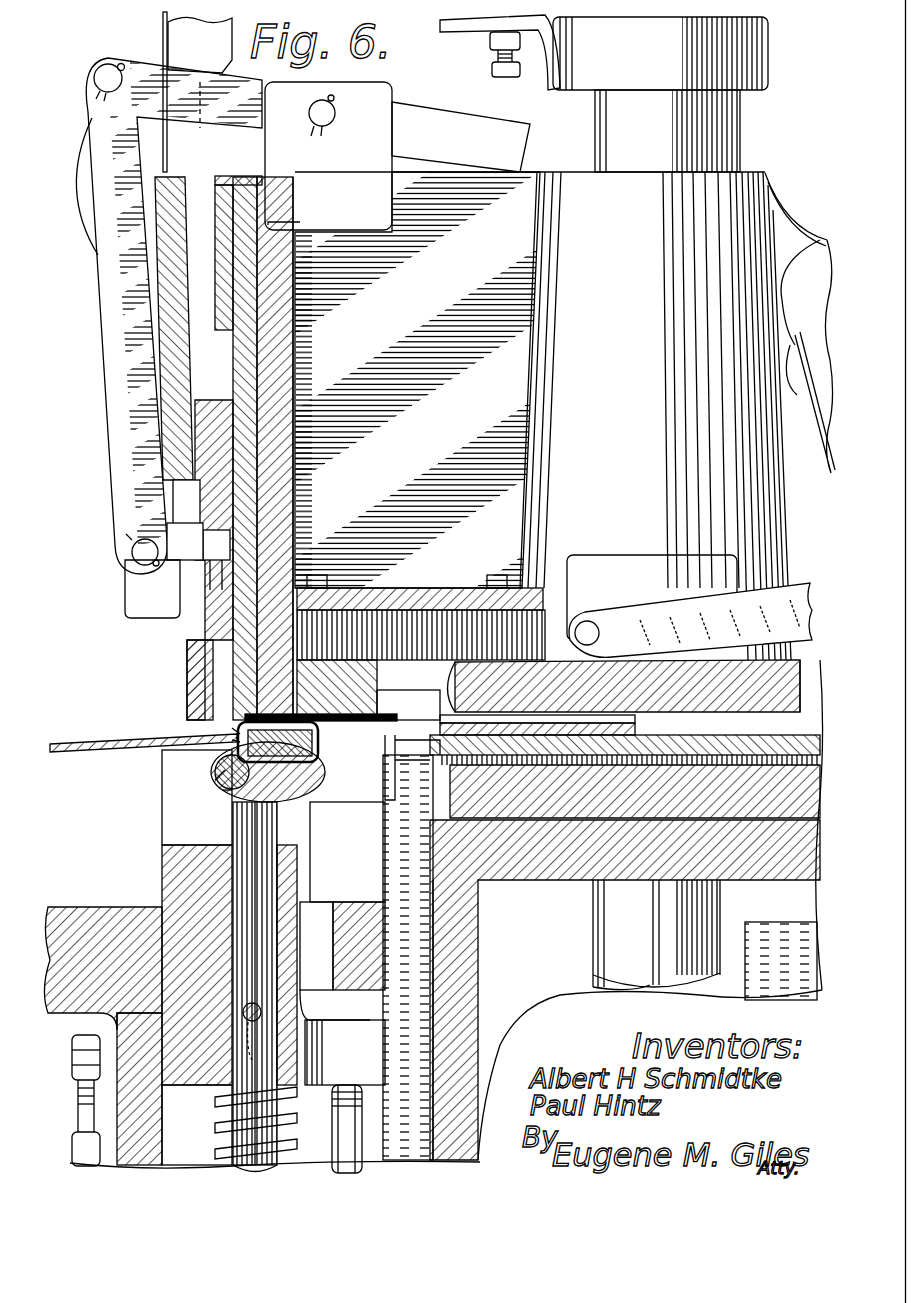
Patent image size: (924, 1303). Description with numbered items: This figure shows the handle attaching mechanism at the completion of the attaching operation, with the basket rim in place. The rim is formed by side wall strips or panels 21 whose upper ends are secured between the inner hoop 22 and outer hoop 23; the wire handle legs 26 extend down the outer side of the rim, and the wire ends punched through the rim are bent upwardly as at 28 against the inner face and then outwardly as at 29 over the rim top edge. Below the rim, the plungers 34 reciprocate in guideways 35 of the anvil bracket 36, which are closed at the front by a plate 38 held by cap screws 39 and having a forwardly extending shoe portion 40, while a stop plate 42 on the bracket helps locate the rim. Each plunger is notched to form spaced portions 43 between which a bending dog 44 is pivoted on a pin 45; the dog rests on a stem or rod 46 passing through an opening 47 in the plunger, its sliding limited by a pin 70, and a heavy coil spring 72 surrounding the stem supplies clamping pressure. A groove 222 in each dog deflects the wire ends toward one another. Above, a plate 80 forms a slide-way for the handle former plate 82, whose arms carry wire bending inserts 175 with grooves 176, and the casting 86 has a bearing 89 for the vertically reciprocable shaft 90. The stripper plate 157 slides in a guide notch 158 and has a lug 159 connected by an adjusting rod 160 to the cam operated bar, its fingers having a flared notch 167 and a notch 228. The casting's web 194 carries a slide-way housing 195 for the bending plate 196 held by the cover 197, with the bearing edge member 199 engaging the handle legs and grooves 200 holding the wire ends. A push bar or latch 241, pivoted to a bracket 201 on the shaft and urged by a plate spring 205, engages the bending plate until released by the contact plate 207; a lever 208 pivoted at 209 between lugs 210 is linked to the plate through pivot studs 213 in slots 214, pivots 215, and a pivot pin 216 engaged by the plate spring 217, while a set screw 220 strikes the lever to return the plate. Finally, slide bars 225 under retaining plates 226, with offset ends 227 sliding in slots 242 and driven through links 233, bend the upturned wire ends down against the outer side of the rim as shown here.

The side wall strips or panels 21 is at (78, 753).
The inner hoop 22 is at (245, 749).
The outer hoop 23 is at (230, 734).
The legs 26 is at (348, 713).
The upwardly bent wire portion 28 is at (306, 786).
The outwardly bent wire portion 29 is at (318, 738).
The plungers 34 is at (170, 868).
The guideways 35 is at (165, 920).
The anvil bracket 36 is at (345, 902).
The plate 38 is at (162, 1135).
The cap screws 39 is at (80, 1135).
The shoe portion 40 is at (60, 918).
The stop plate 42 is at (347, 852).
The laterally spaced portions 43 is at (170, 780).
The bending dog 44 is at (222, 790).
The pin 45 is at (215, 781).
The shaft or rod 46 is at (233, 833).
The opening 47 is at (240, 906).
The pin 70 is at (252, 1002).
The coil spring 72 is at (292, 1130).
The plate 80 is at (560, 808).
The handle former plate 82 is at (811, 825).
The casting 86 is at (766, 170).
The bearing 89 is at (655, 416).
The shaft 90 is at (604, 104).
The stripper plate 157 is at (408, 957).
The guide notch 158 is at (432, 938).
The lug 159 is at (342, 1037).
The threaded adjusting rod 160 is at (365, 1162).
The notch 167 is at (418, 741).
The wire bending insert 175 is at (508, 722).
The longitudinal groove 176 is at (466, 712).
The web 194 is at (530, 380).
The slide-way housing 195 is at (283, 482).
The bending plate 196 is at (198, 640).
The cover 197 is at (178, 378).
The bearing edge member 199 is at (292, 342).
The grooves 200 is at (240, 594).
The bracket 201 is at (482, 32).
The plate spring 205 is at (162, 42).
The contact plate 207 is at (234, 176).
The lever 208 is at (440, 112).
The pivot 209 is at (328, 118).
The lugs 210 is at (328, 156).
The pivot stud 213 is at (176, 578).
The slot 214 is at (186, 625).
The pivot 215 is at (133, 562).
The pivot pin 216 is at (100, 70).
The plate spring 217 is at (82, 214).
The set screw 220 is at (490, 70).
The groove 222 is at (218, 786).
The slide bars 225 is at (650, 620).
The retaining plates 226 is at (457, 586).
The offset forward ends 227 is at (337, 689).
The notch 228 is at (414, 704).
The links 233 is at (683, 606).
The push bar or latch 241 is at (200, 45).
The slots 242 is at (421, 635).